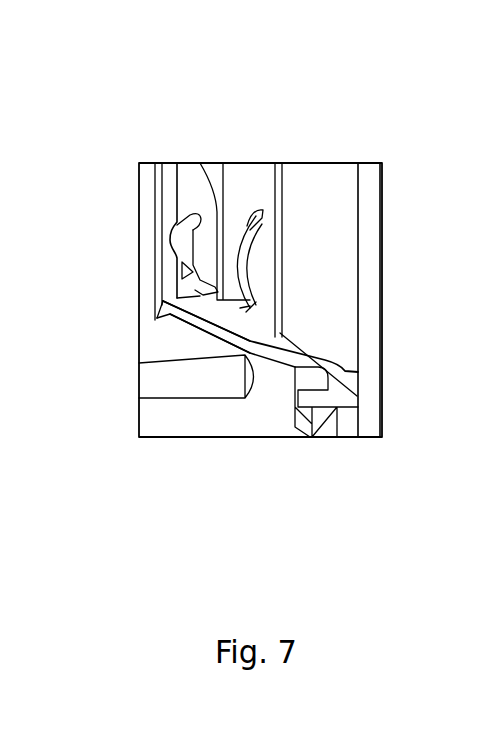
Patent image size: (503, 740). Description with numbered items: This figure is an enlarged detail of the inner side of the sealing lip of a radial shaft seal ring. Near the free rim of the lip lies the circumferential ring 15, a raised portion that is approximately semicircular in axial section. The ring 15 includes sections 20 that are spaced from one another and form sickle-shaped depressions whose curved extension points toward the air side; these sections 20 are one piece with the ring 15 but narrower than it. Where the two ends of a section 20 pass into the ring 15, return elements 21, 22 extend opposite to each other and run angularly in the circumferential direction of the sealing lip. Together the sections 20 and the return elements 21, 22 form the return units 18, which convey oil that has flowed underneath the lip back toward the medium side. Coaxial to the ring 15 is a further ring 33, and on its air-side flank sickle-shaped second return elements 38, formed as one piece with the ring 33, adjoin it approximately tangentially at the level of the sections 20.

The circumferential ring 15 is at (173, 183).
The return units 18 is at (160, 235).
The sections 20 is at (186, 266).
The return element 21 is at (198, 217).
The return element 22 is at (157, 318).
The ring 33 is at (228, 210).
The second return elements 38 is at (265, 232).